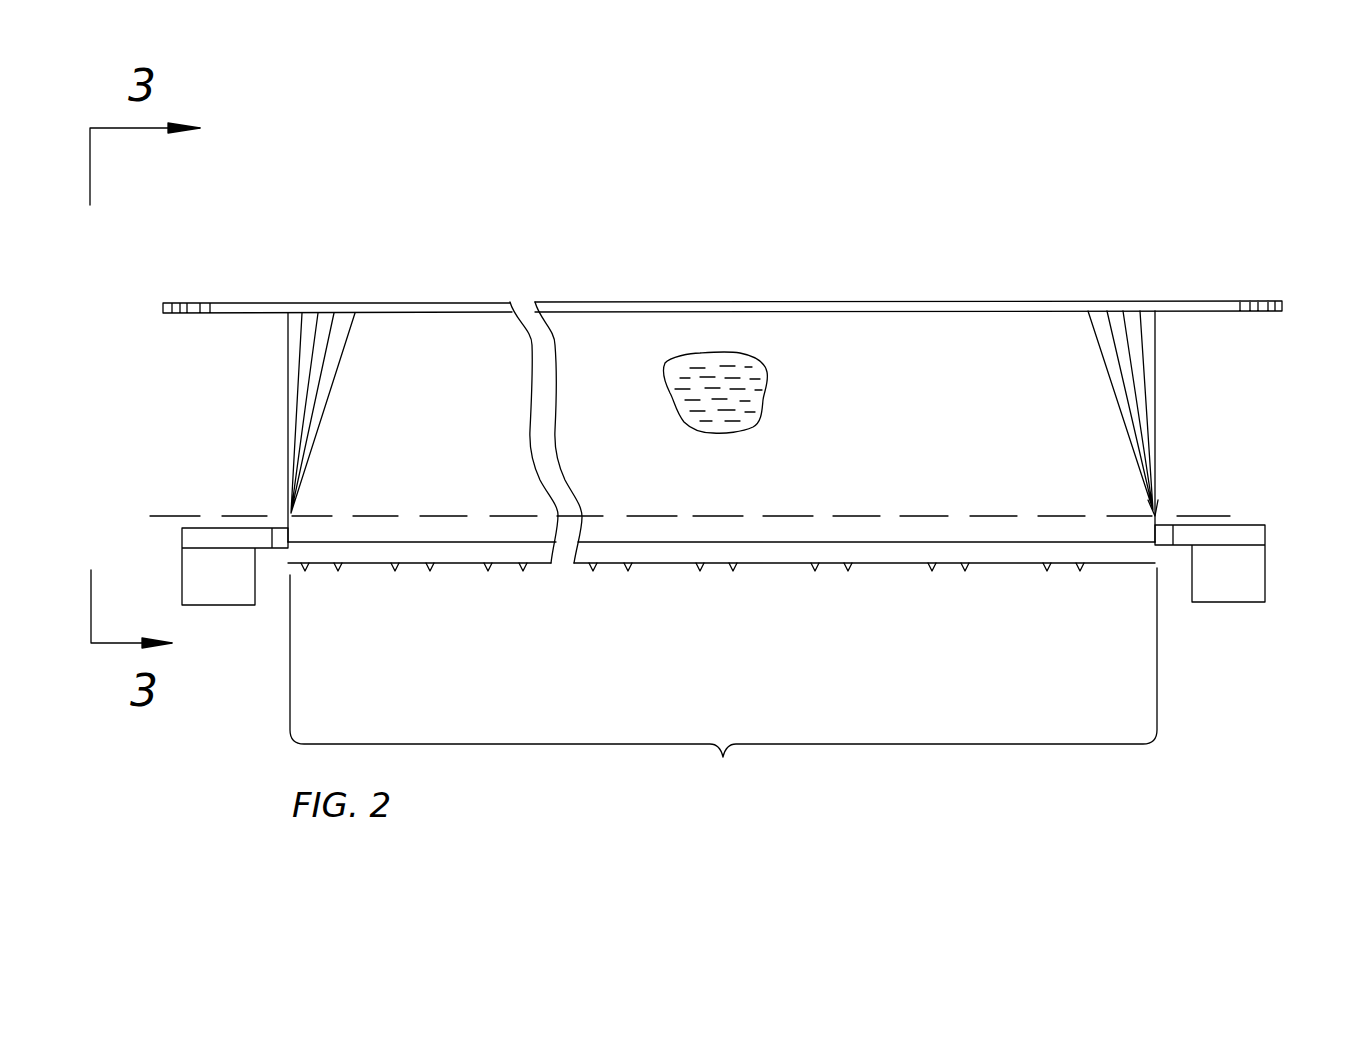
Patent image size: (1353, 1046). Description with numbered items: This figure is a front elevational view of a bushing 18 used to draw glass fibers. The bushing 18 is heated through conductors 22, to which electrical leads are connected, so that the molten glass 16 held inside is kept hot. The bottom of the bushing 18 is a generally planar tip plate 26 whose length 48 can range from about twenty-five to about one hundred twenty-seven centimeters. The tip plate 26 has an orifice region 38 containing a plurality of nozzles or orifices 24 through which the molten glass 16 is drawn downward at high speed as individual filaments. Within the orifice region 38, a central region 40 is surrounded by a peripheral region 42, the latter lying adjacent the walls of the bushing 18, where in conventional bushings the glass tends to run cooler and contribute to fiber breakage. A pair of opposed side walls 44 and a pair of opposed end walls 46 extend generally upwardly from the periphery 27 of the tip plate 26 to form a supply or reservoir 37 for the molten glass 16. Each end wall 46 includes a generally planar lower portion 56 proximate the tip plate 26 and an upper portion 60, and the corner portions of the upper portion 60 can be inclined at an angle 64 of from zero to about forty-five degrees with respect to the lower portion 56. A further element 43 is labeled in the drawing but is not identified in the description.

The molten glass 16 is at (692, 375).
The bushing 18 is at (600, 302).
The conductors 22 is at (1205, 602).
The orifices 24 is at (733, 575).
The tip plate 26 is at (902, 565).
The periphery 27 is at (1138, 560).
The reservoir 37 is at (757, 358).
The orifice region 38 is at (525, 568).
The central region 40 is at (785, 565).
The peripheral region 42 is at (318, 568).
The pivot axis 43 is at (238, 517).
The side walls 44 is at (932, 414).
The end walls 46 is at (288, 448).
The length 48 is at (723, 757).
The lower portion 56 is at (1158, 514).
The upper portion 60 is at (1157, 393).
The angle 64 is at (333, 380).